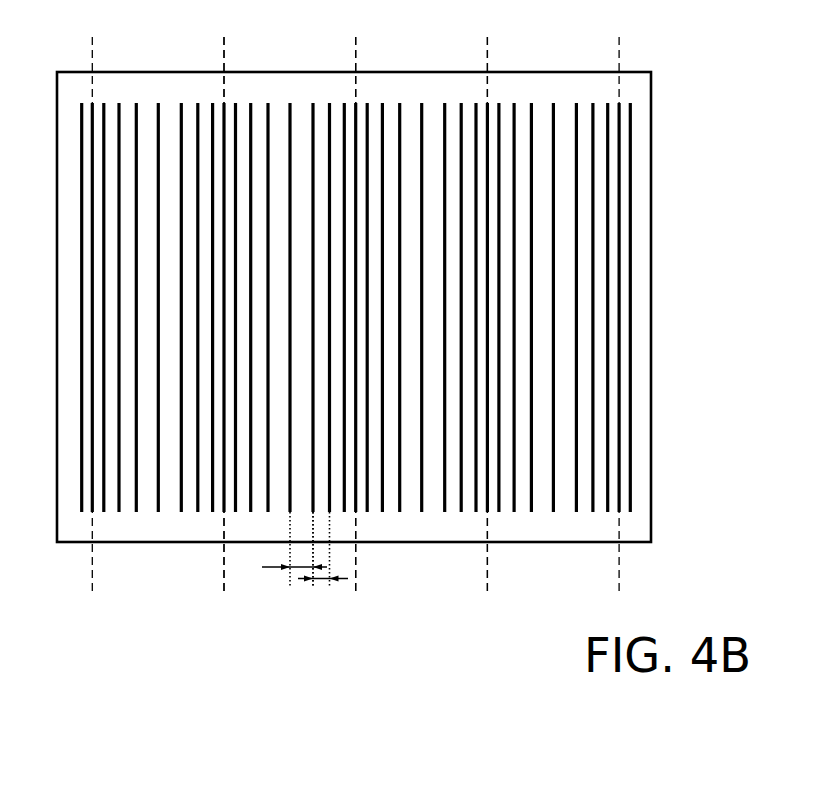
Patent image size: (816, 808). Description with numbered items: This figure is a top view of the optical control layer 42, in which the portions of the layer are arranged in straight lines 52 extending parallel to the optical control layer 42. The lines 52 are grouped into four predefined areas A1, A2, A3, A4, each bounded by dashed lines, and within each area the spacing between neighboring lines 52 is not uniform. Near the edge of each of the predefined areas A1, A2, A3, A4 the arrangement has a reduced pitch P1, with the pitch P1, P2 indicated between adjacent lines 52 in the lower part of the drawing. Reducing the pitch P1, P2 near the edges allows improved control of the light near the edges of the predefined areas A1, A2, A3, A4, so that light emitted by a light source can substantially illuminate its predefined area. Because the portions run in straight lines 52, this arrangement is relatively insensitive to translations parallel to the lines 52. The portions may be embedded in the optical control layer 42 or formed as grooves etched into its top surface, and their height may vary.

The optical control layer 42 is at (129, 530).
The straight lines 52 is at (402, 495).
The predefined area A1 is at (163, 87).
The predefined area A2 is at (295, 87).
The predefined area A3 is at (426, 87).
The predefined area A4 is at (558, 87).
The pitch P1 is at (320, 578).
The pitch P2 is at (272, 567).